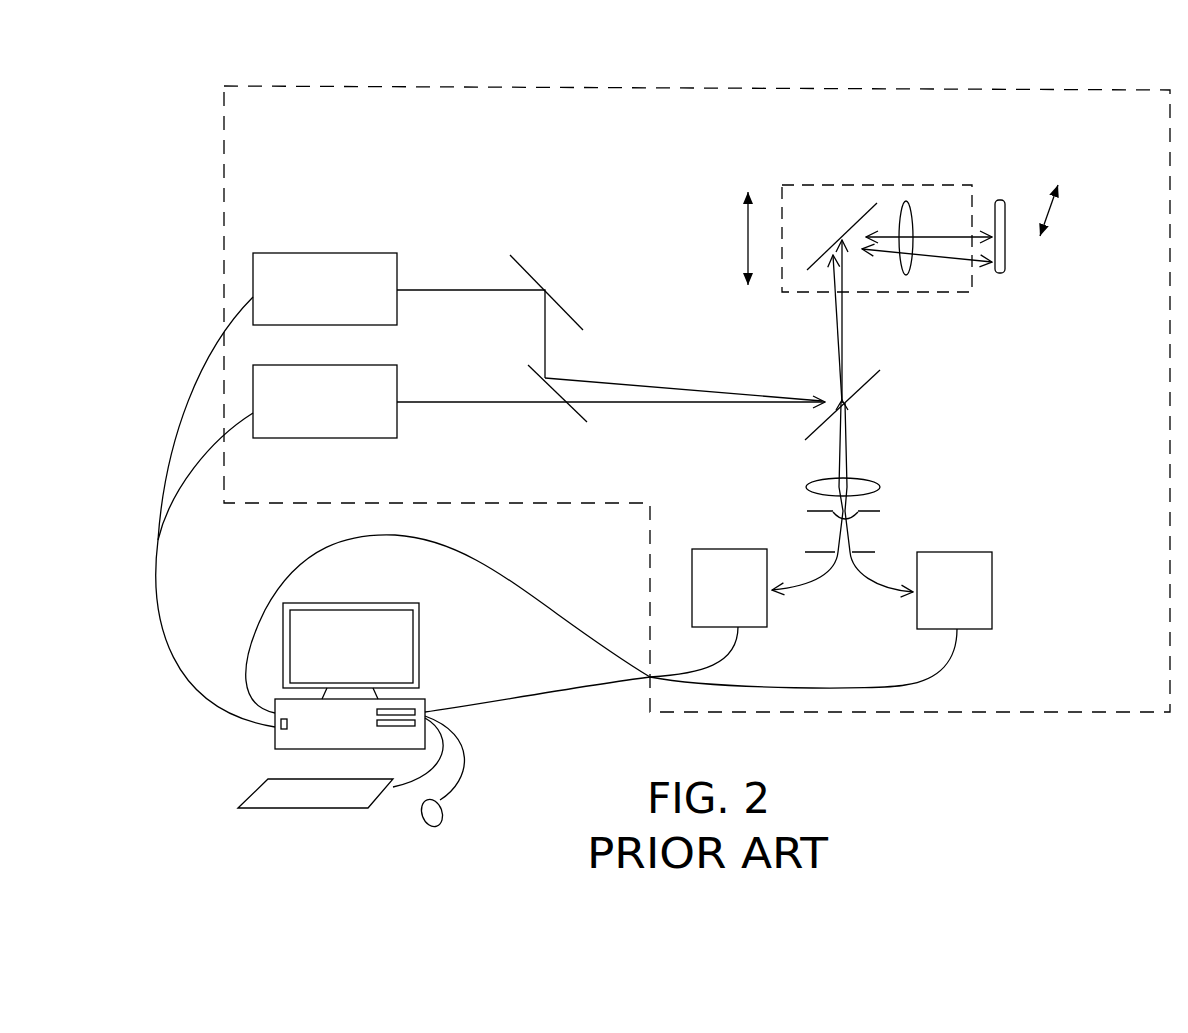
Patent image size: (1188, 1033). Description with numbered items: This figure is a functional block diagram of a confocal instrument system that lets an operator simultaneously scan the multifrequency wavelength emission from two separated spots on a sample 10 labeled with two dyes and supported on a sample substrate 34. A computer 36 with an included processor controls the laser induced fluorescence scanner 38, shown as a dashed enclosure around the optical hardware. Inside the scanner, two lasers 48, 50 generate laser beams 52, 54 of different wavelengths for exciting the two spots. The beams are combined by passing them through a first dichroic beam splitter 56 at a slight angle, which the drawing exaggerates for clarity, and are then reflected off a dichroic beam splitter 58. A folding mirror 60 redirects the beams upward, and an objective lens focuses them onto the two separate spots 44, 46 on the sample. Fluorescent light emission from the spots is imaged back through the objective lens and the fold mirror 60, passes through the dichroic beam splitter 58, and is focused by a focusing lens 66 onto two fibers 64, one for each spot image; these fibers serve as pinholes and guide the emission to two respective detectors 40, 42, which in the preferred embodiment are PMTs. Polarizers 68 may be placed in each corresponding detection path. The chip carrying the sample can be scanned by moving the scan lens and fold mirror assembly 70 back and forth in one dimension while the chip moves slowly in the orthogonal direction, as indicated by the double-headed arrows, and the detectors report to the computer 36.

The sample 10 is at (995, 230).
The sample substrate 34 is at (1005, 253).
The computer 36 is at (420, 648).
The laser induced fluorescence scanner 38 is at (412, 84).
The detector 40 is at (993, 592).
The detector 42 is at (768, 610).
The spot 44 is at (992, 238).
The spot 46 is at (992, 268).
The laser 48 is at (397, 253).
The laser 50 is at (397, 365).
The laser beam 52 is at (438, 290).
The laser beam 54 is at (445, 402).
The first dichroic beam splitter 56 is at (548, 378).
The dichroic beam splitter 58 is at (868, 386).
The folding mirror 60 is at (848, 230).
The fibers 64 is at (846, 576).
The focusing lens 66 is at (870, 481).
The polarizers 68 is at (830, 518).
The scan lens and fold mirror assembly 70 is at (884, 293).